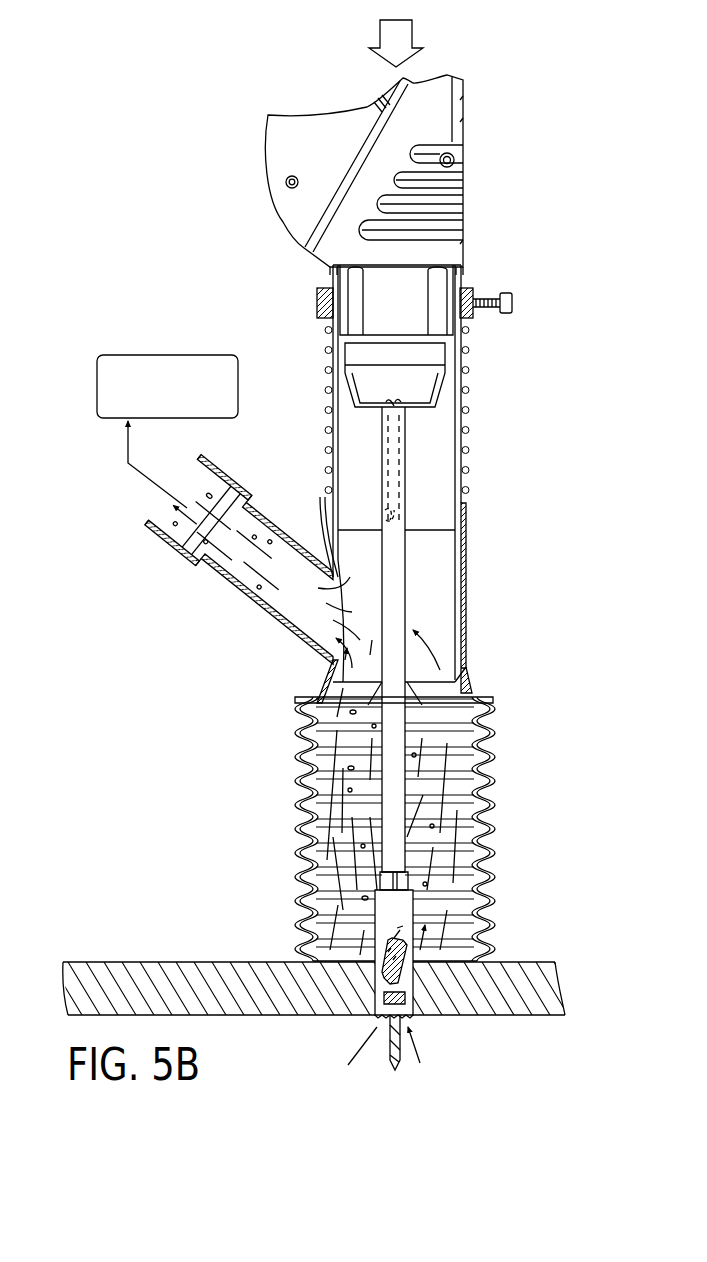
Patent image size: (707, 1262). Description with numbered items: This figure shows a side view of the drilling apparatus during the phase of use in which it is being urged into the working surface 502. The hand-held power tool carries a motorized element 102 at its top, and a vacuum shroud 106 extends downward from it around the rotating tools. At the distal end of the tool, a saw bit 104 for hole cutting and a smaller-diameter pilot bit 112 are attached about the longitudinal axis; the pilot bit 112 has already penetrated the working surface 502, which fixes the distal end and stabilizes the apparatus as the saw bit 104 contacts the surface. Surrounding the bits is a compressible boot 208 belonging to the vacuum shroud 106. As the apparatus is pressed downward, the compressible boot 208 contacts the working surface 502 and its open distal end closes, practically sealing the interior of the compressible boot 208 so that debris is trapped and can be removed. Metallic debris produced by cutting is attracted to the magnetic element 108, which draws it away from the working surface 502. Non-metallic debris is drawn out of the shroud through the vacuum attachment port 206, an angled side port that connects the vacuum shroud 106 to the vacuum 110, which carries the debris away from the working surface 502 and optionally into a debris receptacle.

The motorized element 102 is at (468, 100).
The saw bit 104 is at (413, 997).
The vacuum shroud 106 is at (459, 500).
The magnetic element 108 is at (377, 970).
The vacuum 110 is at (237, 372).
The pilot bit 112 is at (390, 1050).
The vacuum attachment port 206 is at (287, 635).
The compressible boot 208 is at (493, 777).
The working surface 502 is at (505, 1015).